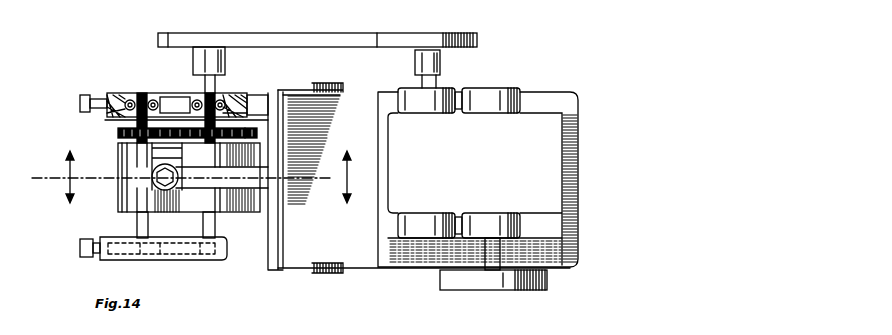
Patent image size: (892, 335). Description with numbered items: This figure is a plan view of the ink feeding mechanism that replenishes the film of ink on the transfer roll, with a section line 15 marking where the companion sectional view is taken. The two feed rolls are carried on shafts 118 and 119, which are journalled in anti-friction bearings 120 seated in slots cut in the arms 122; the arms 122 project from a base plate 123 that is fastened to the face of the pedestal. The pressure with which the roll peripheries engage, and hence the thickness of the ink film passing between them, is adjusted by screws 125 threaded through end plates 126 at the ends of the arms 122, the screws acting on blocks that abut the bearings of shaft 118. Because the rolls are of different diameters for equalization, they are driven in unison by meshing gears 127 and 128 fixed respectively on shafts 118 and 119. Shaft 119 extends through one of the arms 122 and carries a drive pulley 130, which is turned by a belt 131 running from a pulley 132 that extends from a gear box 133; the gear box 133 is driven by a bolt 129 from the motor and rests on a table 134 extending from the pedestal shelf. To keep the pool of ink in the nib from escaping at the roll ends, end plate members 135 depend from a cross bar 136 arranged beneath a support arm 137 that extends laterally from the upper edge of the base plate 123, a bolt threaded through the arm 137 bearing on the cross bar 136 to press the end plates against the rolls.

The section line 15 is at (204, 178).
The shaft 118 is at (137, 230).
The shaft 119 is at (215, 230).
The anti-friction bearings 120 is at (157, 96).
The arms 122 is at (262, 90).
The base plate 123 is at (271, 262).
The screws 125 is at (80, 247).
The end plates 126 is at (107, 96).
The gear 127 is at (120, 134).
The gear 128 is at (262, 128).
The bolt 129 is at (478, 276).
The drive pulley 130 is at (226, 64).
The belt 131 is at (313, 48).
The pulley 132 is at (441, 60).
The gear box 133 is at (555, 178).
The table 134 is at (360, 258).
The end plate members 135 is at (150, 203).
The cross bar 136 is at (155, 157).
The support arm 137 is at (265, 197).